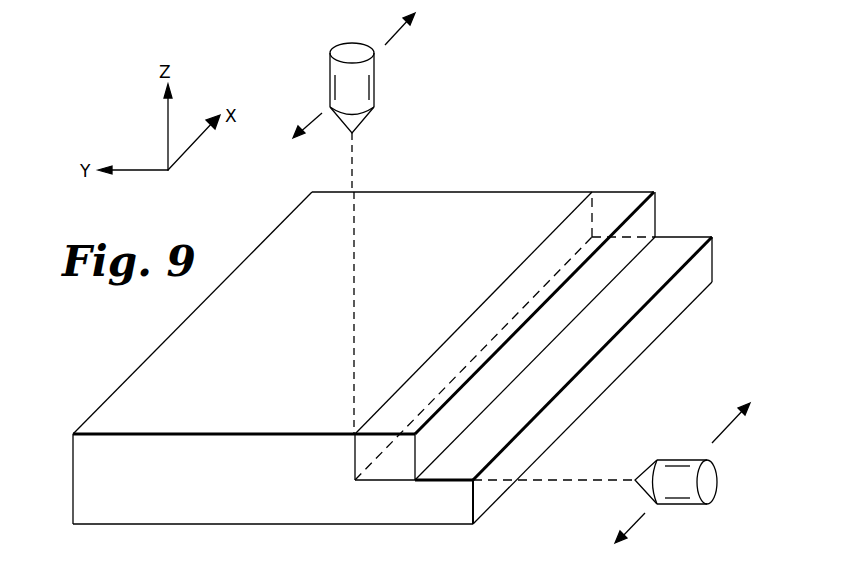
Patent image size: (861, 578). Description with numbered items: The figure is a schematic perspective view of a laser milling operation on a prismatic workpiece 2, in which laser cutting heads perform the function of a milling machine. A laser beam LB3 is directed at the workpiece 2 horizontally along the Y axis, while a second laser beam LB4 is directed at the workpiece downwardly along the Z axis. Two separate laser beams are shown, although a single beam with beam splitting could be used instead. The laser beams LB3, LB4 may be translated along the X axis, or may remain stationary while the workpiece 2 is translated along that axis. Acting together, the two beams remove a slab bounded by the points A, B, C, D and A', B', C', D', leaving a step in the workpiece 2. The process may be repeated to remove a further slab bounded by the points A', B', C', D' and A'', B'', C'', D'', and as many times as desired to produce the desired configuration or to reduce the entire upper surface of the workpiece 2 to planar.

The workpiece 2 is at (317, 324).
The laser beam LB4 is at (373, 90).
The laser beam LB3 is at (678, 470).